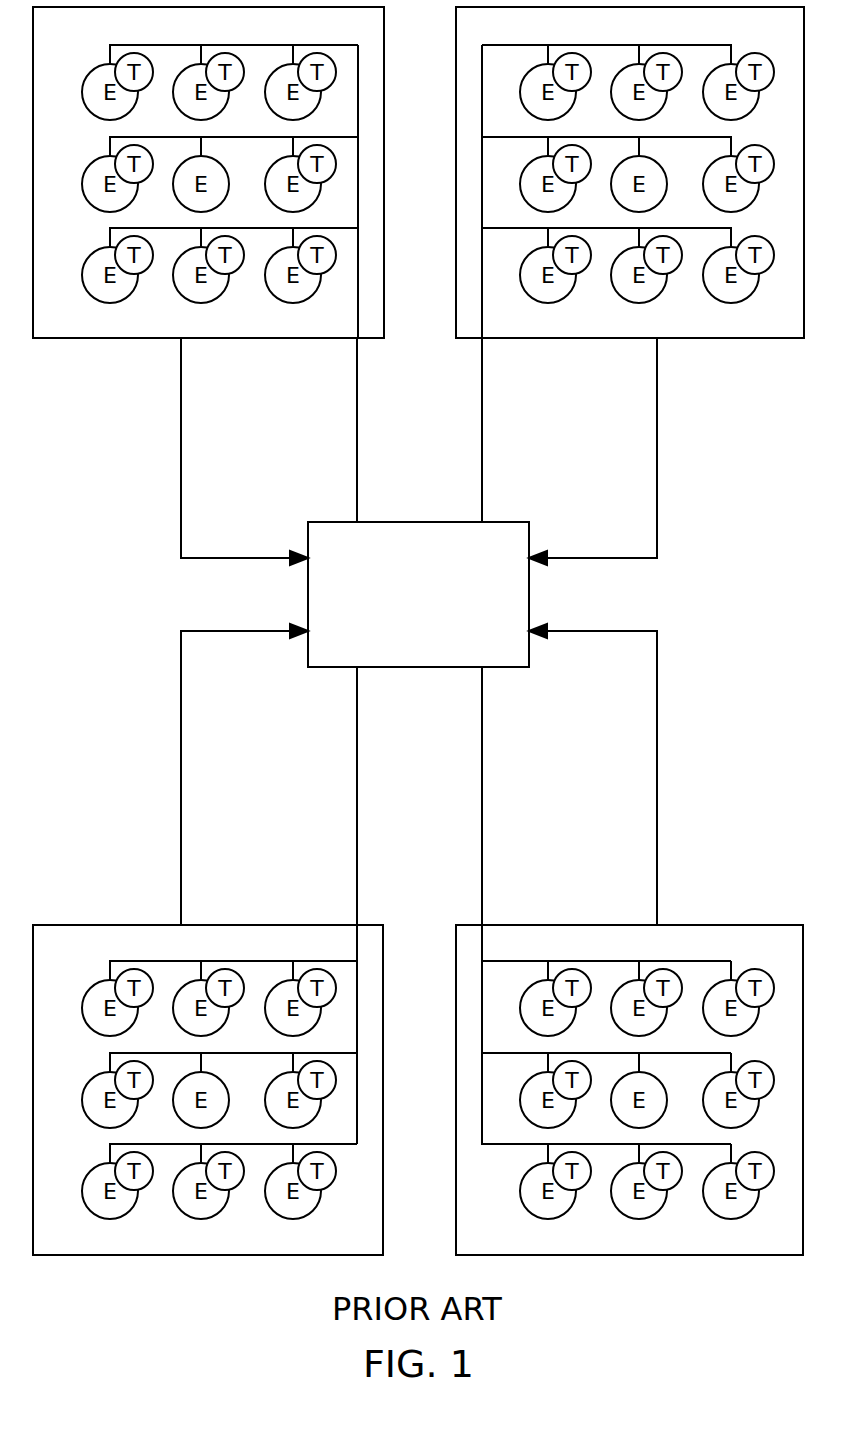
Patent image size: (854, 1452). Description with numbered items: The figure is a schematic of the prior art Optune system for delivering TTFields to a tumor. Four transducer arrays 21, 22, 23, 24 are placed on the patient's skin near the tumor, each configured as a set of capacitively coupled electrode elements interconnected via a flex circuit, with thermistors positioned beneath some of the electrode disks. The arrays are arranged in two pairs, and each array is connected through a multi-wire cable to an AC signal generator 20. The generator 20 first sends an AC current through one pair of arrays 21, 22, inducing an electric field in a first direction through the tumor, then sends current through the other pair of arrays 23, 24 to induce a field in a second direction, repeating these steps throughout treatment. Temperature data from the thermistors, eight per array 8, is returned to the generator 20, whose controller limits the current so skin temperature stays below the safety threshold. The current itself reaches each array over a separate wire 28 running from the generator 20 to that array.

The thermistors 8 is at (165, 433).
The AC signal generator 20 is at (422, 521).
The transducer array 21 is at (69, 325).
The transducer array 22 is at (796, 325).
The transducer array 23 is at (69, 1241).
The transducer array 24 is at (797, 1243).
The wire 28 is at (357, 475).